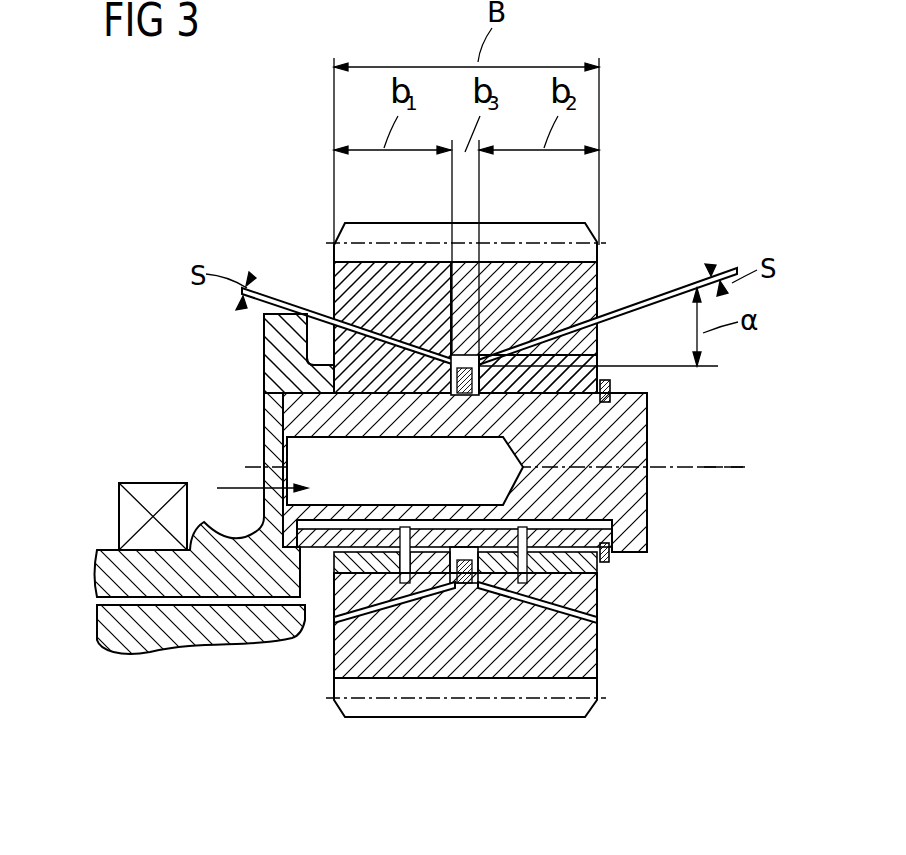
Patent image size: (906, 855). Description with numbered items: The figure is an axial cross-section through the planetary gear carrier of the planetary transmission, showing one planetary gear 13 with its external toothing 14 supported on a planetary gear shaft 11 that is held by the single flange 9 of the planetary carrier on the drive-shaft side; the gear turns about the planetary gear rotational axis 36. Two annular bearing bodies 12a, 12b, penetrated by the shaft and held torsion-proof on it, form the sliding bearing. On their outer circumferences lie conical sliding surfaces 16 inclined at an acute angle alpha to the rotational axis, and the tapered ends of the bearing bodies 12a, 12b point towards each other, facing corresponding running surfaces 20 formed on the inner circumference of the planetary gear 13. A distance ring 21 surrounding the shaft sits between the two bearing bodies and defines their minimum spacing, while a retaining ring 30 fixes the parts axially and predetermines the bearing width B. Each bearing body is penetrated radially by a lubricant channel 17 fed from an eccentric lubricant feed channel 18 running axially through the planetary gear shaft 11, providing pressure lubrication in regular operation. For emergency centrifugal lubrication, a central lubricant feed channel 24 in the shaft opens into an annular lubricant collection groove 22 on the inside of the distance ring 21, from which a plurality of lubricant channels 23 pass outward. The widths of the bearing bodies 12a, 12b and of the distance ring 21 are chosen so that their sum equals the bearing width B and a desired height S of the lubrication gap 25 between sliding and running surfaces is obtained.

The planetary carrier flange 9 is at (275, 326).
The planetary gear shaft 11 is at (634, 497).
The first bearing body 12a is at (280, 358).
The second bearing body 12b is at (620, 397).
The planetary gear 13 is at (562, 283).
The external toothing 14 is at (362, 233).
The conical sliding surface 16 is at (436, 330).
The lubricant channel 17 is at (400, 575).
The eccentric lubricant feed channel 18 is at (581, 575).
The running surface 20 is at (408, 335).
The distance ring 21 is at (452, 352).
The lubricant collection groove 22 is at (462, 583).
The lubricant channel of distance ring 23 is at (537, 394).
The central lubricant feed channel 24 is at (300, 455).
The lubrication gap 25 is at (512, 340).
The retaining ring 30 is at (612, 556).
The planetary gear rotational axis 36 is at (745, 466).